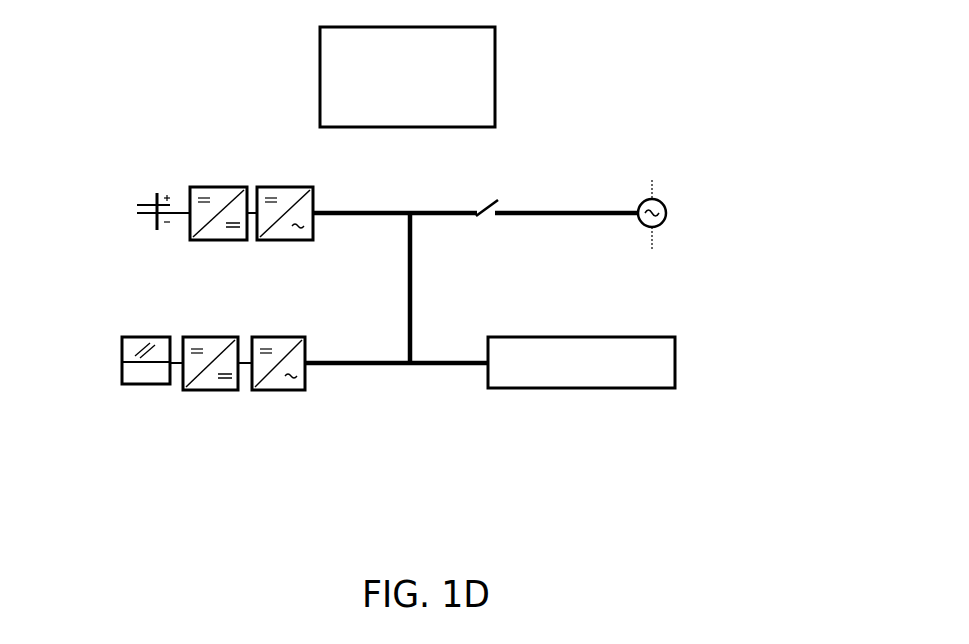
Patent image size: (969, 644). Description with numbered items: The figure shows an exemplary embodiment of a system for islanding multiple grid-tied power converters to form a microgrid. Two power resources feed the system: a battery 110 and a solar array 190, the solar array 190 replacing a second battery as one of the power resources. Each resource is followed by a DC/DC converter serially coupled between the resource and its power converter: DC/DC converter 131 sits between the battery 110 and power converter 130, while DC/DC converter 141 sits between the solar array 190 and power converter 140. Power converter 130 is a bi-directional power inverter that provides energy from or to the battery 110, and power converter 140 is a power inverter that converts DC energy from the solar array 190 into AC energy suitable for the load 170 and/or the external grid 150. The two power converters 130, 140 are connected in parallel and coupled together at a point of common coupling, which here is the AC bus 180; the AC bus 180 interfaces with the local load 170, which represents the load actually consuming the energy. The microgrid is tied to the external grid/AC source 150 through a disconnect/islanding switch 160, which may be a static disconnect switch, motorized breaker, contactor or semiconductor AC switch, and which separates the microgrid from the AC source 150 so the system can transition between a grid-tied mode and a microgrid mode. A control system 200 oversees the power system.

The battery 110 is at (163, 178).
The power converter 130 is at (293, 178).
The DC/DC converter 131 is at (221, 181).
The power converter 140 is at (300, 392).
The DC/DC converter 141 is at (225, 392).
The external grid/AC source 150 is at (677, 198).
The disconnect/islanding switch 160 is at (512, 197).
The load 170 is at (590, 388).
The AC bus 180 is at (415, 277).
The solar array 190 is at (138, 387).
The control system 200 is at (503, 113).